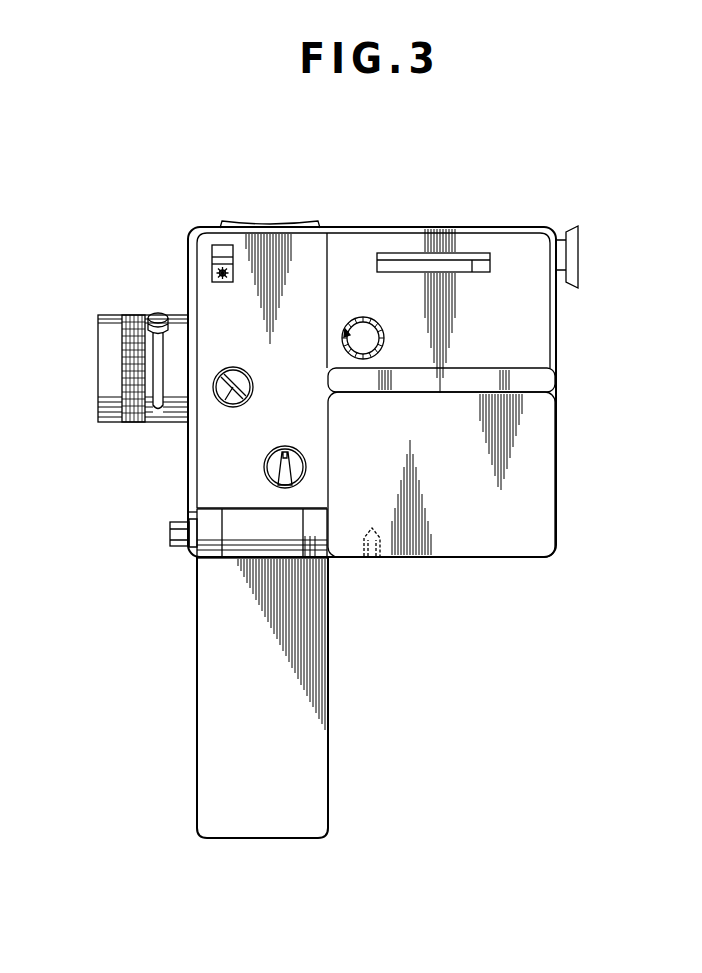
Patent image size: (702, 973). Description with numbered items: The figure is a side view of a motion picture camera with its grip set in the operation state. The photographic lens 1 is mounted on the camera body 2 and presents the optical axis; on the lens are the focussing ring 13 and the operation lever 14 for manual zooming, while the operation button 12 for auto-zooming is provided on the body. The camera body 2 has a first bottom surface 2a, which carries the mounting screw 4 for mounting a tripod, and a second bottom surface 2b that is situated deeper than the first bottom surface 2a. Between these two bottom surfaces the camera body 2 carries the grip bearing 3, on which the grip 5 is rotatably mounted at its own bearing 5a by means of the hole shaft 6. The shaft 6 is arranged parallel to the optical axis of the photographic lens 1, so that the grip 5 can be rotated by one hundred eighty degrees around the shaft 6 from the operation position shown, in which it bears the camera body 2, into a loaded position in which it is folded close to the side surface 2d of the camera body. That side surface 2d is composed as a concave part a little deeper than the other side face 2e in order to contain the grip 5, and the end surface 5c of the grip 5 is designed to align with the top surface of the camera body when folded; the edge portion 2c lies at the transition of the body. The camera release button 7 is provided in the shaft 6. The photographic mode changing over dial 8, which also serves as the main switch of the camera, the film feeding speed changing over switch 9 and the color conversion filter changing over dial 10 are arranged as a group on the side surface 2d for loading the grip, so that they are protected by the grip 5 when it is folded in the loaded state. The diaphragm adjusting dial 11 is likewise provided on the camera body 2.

The photographic lens 1 is at (123, 343).
The camera body 2 is at (510, 225).
The first bottom surface 2a is at (512, 558).
The second bottom surface 2b is at (262, 516).
The body edge portion 2c is at (317, 540).
The side surface 2d is at (287, 325).
The other side face 2e is at (424, 474).
The grip bearing 3 is at (248, 536).
The mounting screw 4 is at (372, 557).
The grip 5 is at (305, 737).
The bearing 5a is at (210, 536).
The end surface 5c is at (296, 840).
The hole shaft 6 is at (192, 522).
The camera release button 7 is at (170, 536).
The photographic mode changing over dial 8 is at (292, 463).
The film feeding speed changing over switch 9 is at (228, 404).
The color conversion filter changing over dial 10 is at (210, 248).
The diaphragm adjusting dial 11 is at (364, 339).
The operation button for auto-zooming 12 is at (318, 222).
The focussing ring 13 is at (131, 318).
The operation lever for manual zooming 14 is at (158, 312).